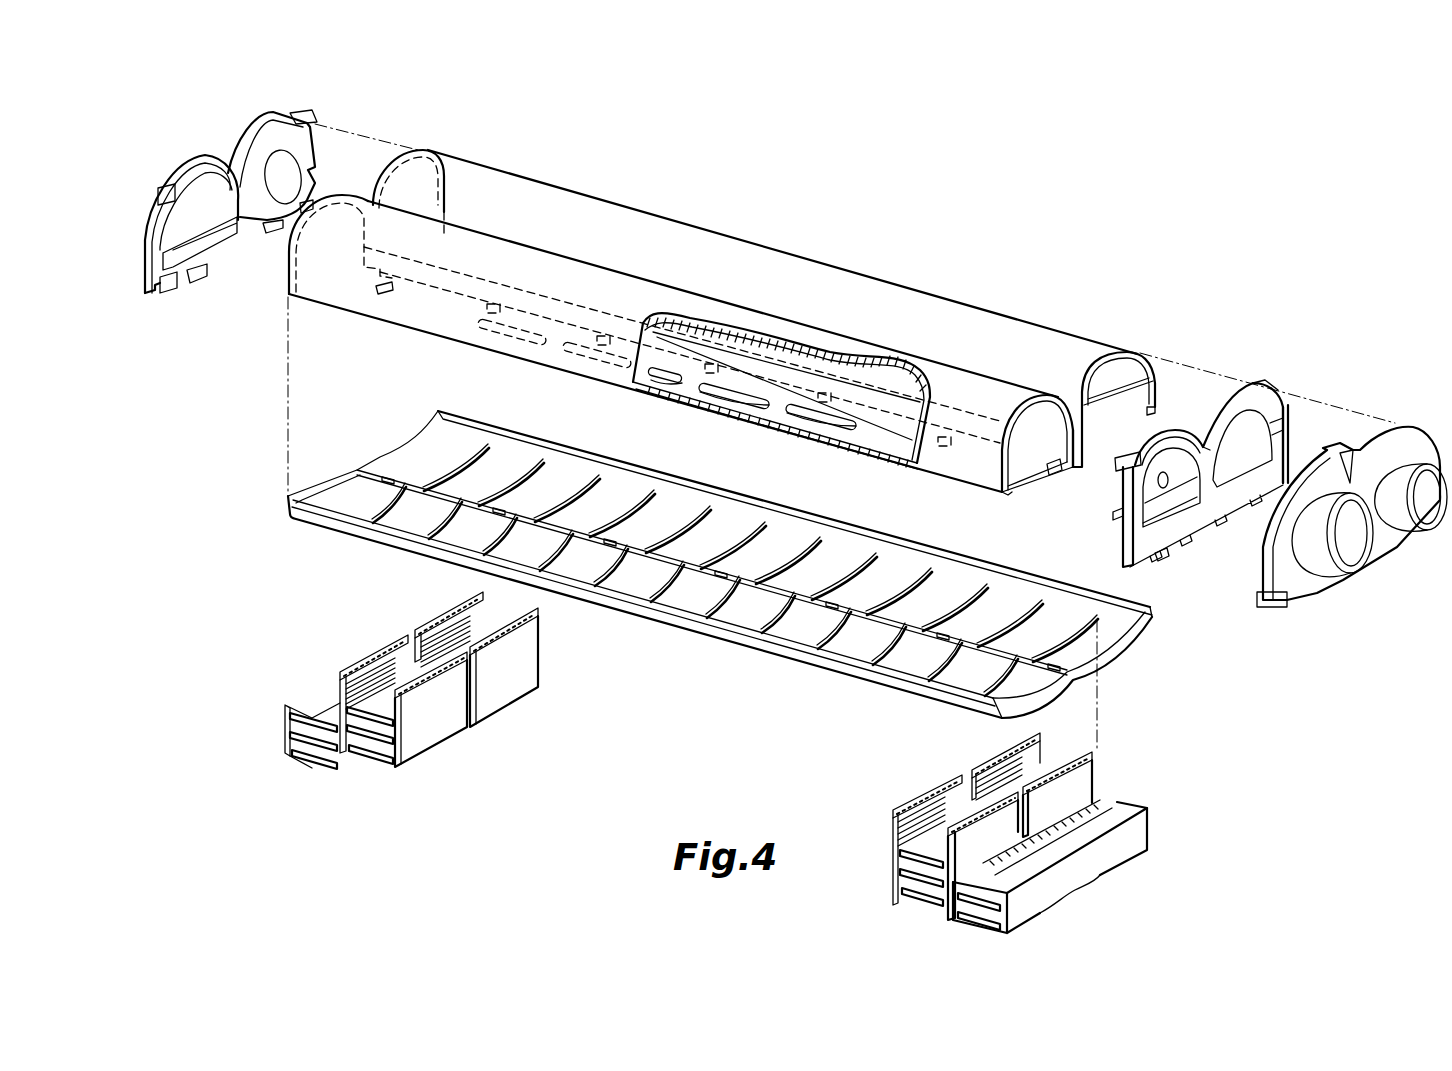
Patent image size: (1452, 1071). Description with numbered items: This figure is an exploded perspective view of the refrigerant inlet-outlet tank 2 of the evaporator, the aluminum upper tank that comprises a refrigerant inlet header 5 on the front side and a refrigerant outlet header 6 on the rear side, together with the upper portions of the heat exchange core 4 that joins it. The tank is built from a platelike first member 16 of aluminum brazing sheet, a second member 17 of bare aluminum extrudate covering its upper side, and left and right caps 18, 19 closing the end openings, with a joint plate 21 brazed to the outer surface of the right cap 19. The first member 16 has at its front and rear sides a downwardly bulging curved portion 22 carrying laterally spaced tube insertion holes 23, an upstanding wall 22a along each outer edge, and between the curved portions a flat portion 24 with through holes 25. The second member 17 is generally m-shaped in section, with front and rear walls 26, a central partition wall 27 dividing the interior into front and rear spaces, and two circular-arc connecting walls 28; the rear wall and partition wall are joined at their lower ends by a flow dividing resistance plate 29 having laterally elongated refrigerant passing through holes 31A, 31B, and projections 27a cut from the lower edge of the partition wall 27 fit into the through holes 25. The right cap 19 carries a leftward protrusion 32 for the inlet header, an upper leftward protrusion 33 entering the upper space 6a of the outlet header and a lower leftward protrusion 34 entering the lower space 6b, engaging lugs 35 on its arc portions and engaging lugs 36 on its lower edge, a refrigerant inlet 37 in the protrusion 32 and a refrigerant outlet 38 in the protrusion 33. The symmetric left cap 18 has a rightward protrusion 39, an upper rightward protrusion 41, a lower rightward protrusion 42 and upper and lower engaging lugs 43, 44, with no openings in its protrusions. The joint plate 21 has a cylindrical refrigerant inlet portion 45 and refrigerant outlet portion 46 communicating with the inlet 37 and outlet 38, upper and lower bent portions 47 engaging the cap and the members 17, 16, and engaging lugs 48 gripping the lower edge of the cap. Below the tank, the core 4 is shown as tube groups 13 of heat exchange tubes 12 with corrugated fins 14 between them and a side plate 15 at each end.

The refrigerant inlet-outlet tank 2 is at (1068, 182).
The heat exchange core 4 is at (265, 656).
The refrigerant inlet header 5 is at (780, 270).
The refrigerant outlet header 6 is at (515, 255).
The upper space 6a is at (1040, 412).
The lower space 6b is at (745, 610).
The heat exchange tubes 12 is at (445, 735).
The tube groups 13 is at (433, 615).
The corrugated fins 14 is at (320, 767).
The side plate 15 is at (292, 737).
The first member 16 is at (780, 655).
The second member 17 is at (905, 300).
The left cap 18 is at (248, 122).
The right cap 19 is at (1240, 385).
The joint plate 21 is at (1375, 430).
The curved portion 22 is at (1082, 706).
The upstanding walls 22a is at (845, 665).
The tube insertion holes 23 is at (447, 470).
The flat portion 24 is at (380, 475).
The through holes 25 is at (607, 537).
The front and rear walls 26 is at (1160, 367).
The partition wall 27 is at (1082, 452).
The projections 27a is at (388, 280).
The connecting walls 28 is at (662, 300).
The flow dividing resistance plate 29 is at (1035, 480).
The refrigerant passing through holes 31A is at (660, 381).
The refrigerant passing through holes 31B is at (830, 425).
The leftward protrusion 32 is at (1222, 385).
The upper leftward protrusion 33 is at (1150, 445).
The lower leftward protrusion 34 is at (1125, 530).
The engaging lug 35 is at (1275, 380).
The engaging lug 36 is at (1163, 550).
The refrigerant inlet 37 is at (1280, 400).
The refrigerant outlet 38 is at (1165, 477).
The rightward protrusion 39 is at (312, 137).
The upper rightward protrusion 41 is at (200, 183).
The lower rightward protrusion 42 is at (223, 247).
The upper engaging lug 43 is at (305, 108).
The lower engaging lug 44 is at (190, 280).
The refrigerant inlet portion 45 is at (1415, 530).
The refrigerant outlet portion 46 is at (1343, 580).
The bent portion 47 is at (1340, 445).
The engaging lug 48 is at (1265, 610).